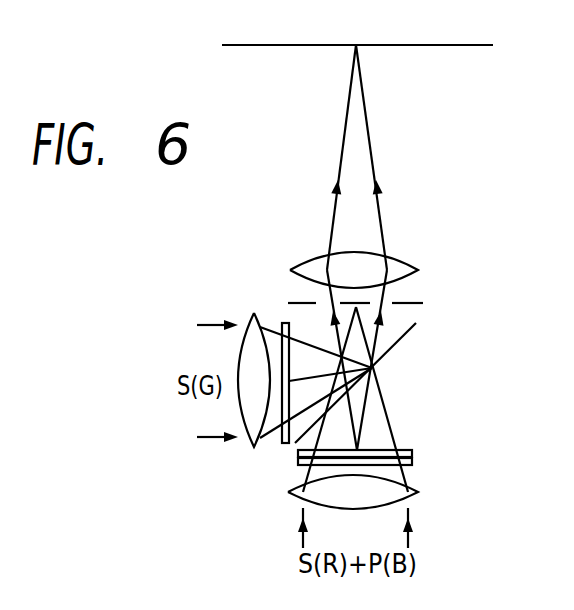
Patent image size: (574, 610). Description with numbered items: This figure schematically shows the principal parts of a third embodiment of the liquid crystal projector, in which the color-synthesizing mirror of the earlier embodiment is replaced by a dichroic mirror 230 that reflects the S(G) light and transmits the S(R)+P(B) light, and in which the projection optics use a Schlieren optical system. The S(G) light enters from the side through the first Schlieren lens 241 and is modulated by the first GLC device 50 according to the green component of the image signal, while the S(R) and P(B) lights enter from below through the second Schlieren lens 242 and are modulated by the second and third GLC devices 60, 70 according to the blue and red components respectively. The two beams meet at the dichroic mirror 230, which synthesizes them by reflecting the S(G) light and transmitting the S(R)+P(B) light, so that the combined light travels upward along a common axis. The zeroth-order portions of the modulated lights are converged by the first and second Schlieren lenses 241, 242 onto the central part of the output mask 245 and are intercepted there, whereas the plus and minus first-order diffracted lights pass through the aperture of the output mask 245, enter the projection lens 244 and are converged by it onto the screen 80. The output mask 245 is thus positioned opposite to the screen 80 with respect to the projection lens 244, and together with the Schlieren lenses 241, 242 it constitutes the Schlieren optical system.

The screen 80 is at (463, 47).
The projection lens 244 is at (403, 258).
The output mask 245 is at (415, 300).
The first GLC device 50 is at (284, 326).
The dichroic mirror 230 is at (412, 328).
The first Schlieren lens 241 is at (252, 449).
The second GLC device 60 is at (403, 453).
The third GLC device 70 is at (412, 461).
The second Schlieren lens 242 is at (418, 489).